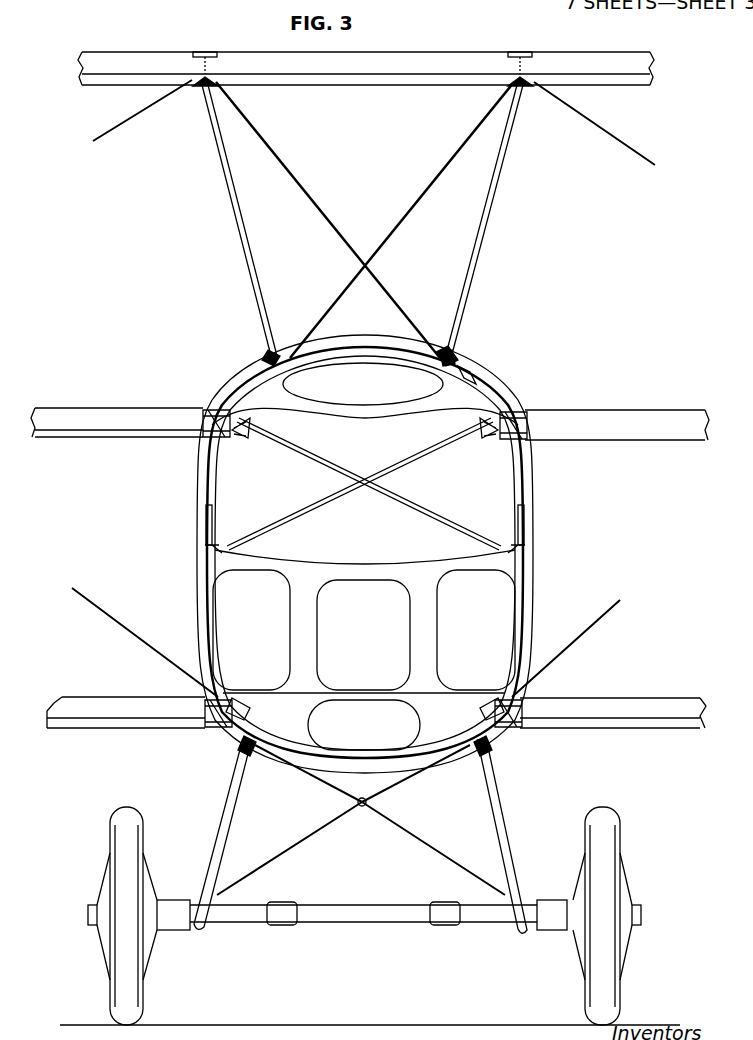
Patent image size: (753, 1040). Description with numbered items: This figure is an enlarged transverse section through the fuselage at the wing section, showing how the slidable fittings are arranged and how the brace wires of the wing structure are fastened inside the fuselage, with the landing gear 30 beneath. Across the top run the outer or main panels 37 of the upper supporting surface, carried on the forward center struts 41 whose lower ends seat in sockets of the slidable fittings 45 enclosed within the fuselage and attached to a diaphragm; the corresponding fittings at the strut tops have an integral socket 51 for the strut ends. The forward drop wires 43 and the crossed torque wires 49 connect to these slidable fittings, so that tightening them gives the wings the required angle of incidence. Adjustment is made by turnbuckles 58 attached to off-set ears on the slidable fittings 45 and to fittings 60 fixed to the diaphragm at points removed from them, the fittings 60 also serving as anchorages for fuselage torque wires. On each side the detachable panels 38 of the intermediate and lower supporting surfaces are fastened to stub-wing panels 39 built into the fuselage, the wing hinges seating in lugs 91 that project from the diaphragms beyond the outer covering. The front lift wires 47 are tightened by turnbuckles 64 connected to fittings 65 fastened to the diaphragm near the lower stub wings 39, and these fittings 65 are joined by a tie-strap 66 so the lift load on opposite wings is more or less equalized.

The landing gear 30 is at (118, 823).
The outer or main panel of the upper supporting surface 37 is at (123, 56).
The detachable panel 38 is at (127, 414).
The stub-wing or fixed panel 39 is at (470, 45).
The center strut 41 is at (224, 166).
The forward drop wire 43 is at (141, 121).
The slidable fitting 45 is at (462, 363).
The front lift wire 47 is at (123, 624).
The torque wire 49 is at (449, 159).
The socket 51 is at (488, 369).
The turnbuckle 58 is at (243, 388).
The fitting 60 is at (238, 433).
The turnbuckle 64 is at (258, 703).
The fitting 65 is at (265, 748).
The tie-strap 66 is at (363, 752).
The extension or lug 91 is at (526, 411).